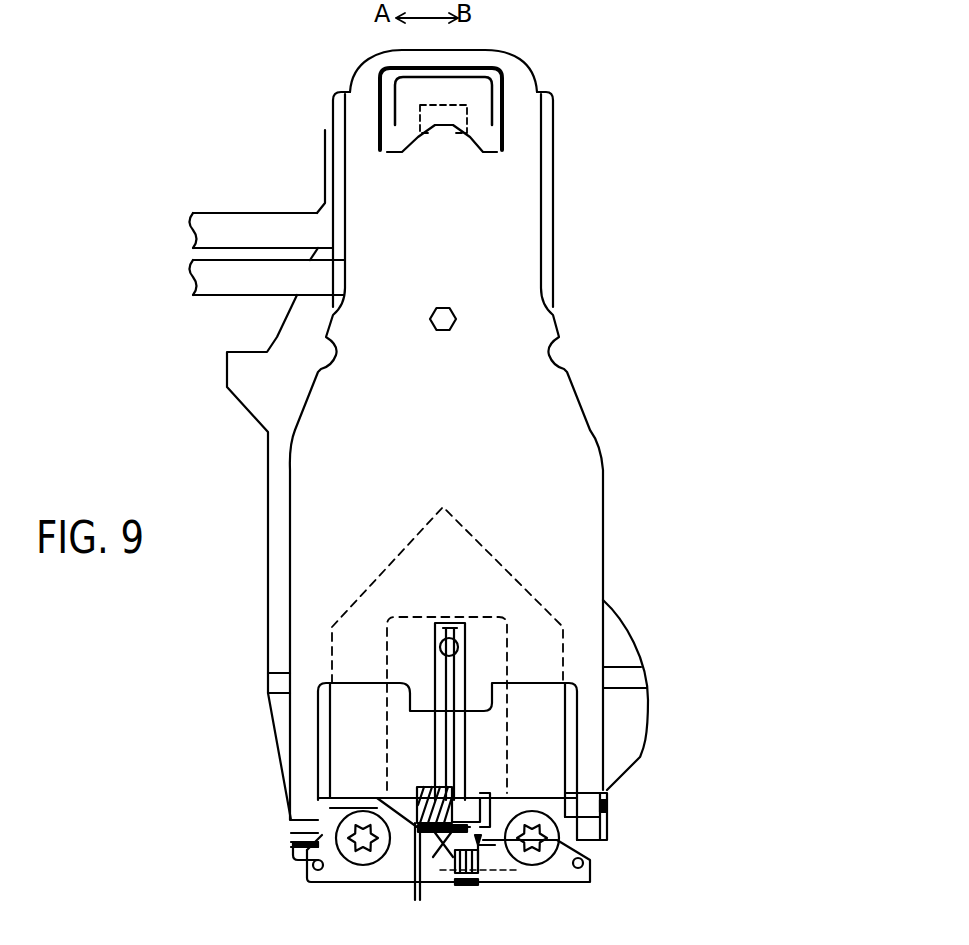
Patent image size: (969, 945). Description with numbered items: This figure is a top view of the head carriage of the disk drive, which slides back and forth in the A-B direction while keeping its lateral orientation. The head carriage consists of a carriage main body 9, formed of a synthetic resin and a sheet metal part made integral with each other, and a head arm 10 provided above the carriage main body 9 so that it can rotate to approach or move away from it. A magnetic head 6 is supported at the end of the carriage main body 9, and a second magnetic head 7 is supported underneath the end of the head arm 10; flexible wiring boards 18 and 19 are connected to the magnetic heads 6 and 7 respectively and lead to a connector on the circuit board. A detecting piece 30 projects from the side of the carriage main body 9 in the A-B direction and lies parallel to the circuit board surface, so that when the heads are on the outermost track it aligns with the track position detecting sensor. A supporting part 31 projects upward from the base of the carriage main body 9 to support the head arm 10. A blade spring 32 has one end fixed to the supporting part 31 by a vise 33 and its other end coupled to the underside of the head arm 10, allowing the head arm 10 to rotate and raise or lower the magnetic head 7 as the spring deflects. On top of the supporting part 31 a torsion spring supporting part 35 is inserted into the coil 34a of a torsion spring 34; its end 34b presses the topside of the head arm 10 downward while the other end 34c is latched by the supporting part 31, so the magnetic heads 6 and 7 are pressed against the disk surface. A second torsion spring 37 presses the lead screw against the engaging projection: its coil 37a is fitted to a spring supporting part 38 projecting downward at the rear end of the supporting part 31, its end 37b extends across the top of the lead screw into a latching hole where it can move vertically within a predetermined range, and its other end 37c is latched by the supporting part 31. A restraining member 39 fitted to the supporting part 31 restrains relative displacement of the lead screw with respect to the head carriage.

The magnetic head 6 is at (512, 78).
The magnetic head 7 is at (484, 102).
The carriage main body 9 is at (620, 644).
The head arm 10 is at (583, 442).
The flexible wiring board 18 is at (247, 228).
The flexible wiring board 19 is at (230, 291).
The detecting piece 30 is at (236, 375).
The supporting part 31 is at (297, 835).
The blade spring 32 is at (558, 727).
The vise 33 is at (350, 847).
The torsion spring 34 is at (406, 795).
The coil 34a is at (428, 786).
The end of torsion spring 34b is at (455, 665).
The other end of torsion spring 34c is at (403, 848).
The torsion spring supporting part 35 is at (468, 800).
The torsion spring 37 is at (477, 880).
The coil 37a is at (463, 887).
The end of torsion spring 37b is at (428, 863).
The other end of torsion spring 37c is at (487, 845).
The spring supporting part 38 is at (478, 845).
The restraining member 39 is at (553, 807).